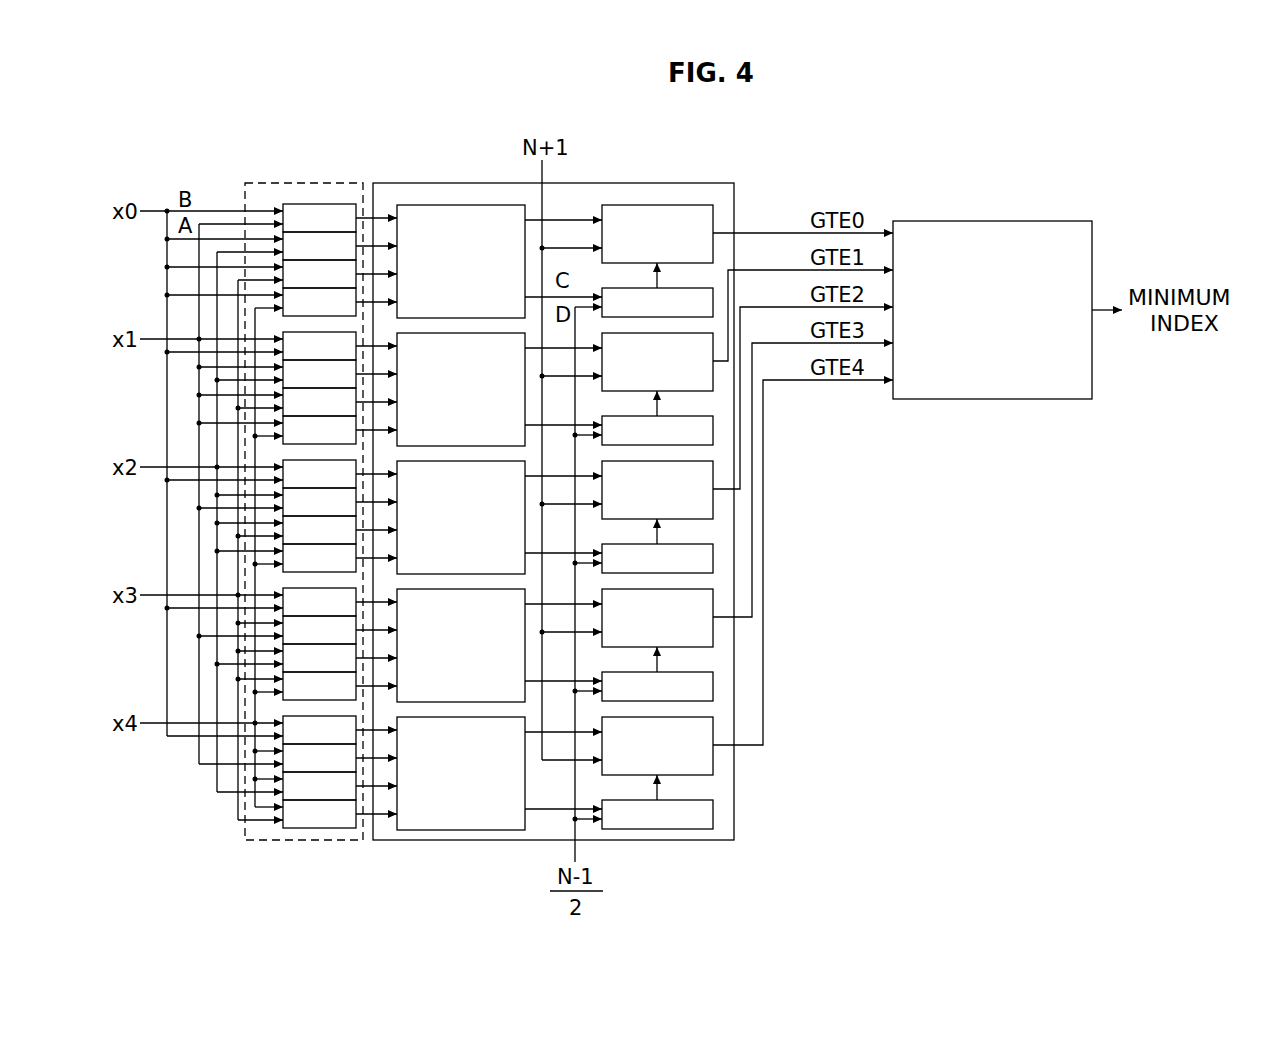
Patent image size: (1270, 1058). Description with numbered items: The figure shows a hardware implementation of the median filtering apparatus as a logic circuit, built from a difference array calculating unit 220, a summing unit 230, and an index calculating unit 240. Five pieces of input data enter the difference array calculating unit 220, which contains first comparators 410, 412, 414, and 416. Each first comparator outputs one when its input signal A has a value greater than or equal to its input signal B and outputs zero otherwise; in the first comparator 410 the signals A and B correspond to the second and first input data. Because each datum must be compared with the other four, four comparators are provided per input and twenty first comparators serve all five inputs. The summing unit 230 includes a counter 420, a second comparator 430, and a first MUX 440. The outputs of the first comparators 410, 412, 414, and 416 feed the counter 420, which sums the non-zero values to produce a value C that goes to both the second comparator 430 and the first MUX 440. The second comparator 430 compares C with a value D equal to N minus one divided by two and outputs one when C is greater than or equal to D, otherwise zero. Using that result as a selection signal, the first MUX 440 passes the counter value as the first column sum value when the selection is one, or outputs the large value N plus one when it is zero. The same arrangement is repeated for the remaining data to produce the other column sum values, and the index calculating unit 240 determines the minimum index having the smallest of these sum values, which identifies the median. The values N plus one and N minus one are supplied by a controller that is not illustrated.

The difference array calculating unit 220 is at (303, 183).
The summing unit 230 is at (608, 183).
The index calculating unit 240 is at (990, 221).
The first comparator 410 is at (290, 203).
The first comparator 412 is at (292, 238).
The first comparator 414 is at (292, 275).
The first comparator 416 is at (292, 302).
The counter 420 is at (457, 205).
The second comparator 430 is at (713, 289).
The first MUX 440 is at (693, 205).